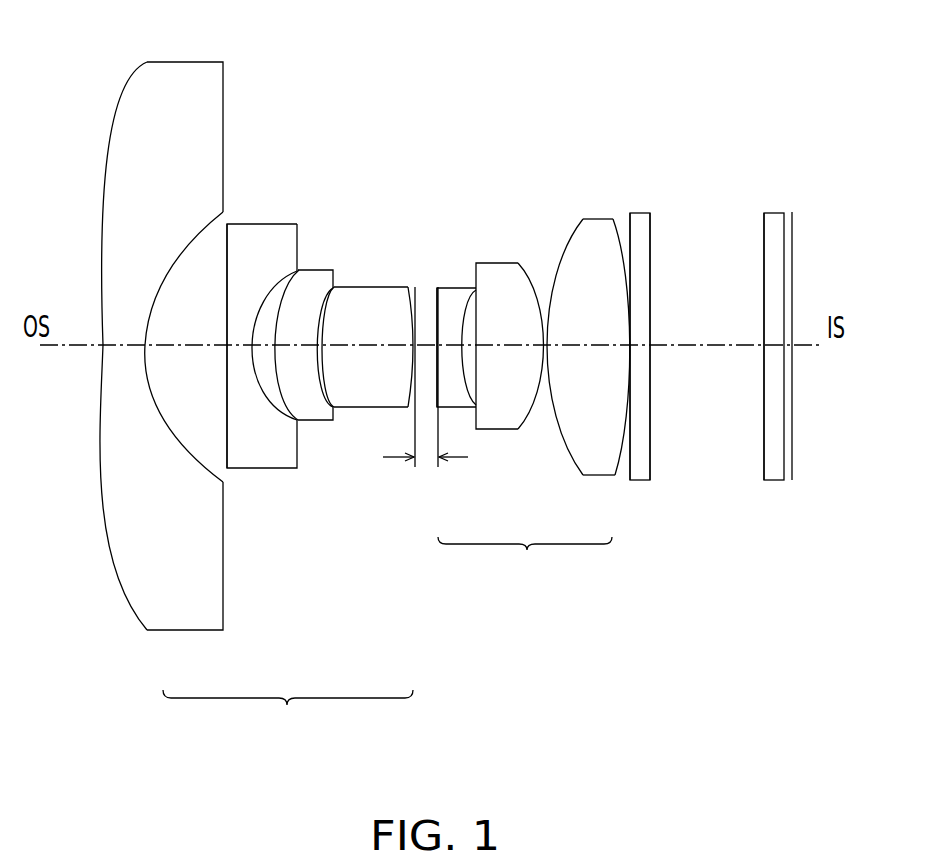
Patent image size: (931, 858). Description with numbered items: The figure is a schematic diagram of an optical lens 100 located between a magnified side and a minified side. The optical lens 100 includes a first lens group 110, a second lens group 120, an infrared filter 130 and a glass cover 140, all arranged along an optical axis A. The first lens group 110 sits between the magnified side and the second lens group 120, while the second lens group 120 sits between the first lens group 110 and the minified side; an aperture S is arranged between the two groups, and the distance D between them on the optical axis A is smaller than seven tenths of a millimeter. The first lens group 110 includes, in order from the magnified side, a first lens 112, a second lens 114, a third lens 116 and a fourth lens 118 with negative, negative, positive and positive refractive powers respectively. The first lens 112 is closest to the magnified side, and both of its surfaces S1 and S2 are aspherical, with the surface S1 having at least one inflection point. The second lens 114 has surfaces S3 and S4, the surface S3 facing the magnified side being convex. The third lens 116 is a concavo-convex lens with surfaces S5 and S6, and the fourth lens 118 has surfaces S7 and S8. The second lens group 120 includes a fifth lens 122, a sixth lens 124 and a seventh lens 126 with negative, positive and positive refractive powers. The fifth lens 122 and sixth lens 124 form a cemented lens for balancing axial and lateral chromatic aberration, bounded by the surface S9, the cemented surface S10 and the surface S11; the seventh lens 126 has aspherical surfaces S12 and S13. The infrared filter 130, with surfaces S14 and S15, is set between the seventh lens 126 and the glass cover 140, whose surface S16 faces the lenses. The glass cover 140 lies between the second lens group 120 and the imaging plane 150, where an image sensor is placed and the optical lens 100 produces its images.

The optical lens 100 is at (728, 740).
The first lens group 110 is at (255, 380).
The first lens 112 is at (180, 355).
The second lens 114 is at (273, 415).
The third lens 116 is at (331, 436).
The fourth lens 118 is at (372, 458).
The second lens group 120 is at (552, 376).
The fifth lens 122 is at (450, 378).
The sixth lens 124 is at (510, 368).
The seventh lens 126 is at (611, 352).
The infrared filter 130 is at (654, 353).
The glass cover 140 is at (759, 361).
The imaging plane 150 is at (794, 468).
The aperture S is at (416, 388).
The distance D is at (425, 389).
The optical axis A is at (63, 349).
The surface of the first lens facing the magnified side S1 is at (124, 99).
The surface of the first lens S2 is at (184, 250).
The surface of the second lens facing the magnified side S3 is at (226, 233).
The surface of the second lens S4 is at (264, 297).
The surface of the third lens S5 is at (291, 283).
The surface of the third lens S6 is at (320, 318).
The surface of the fourth lens S7 is at (324, 306).
The surface of the fourth lens S8 is at (413, 316).
The surface of the fifth lens S9 is at (436, 316).
The cemented surface S10 is at (464, 316).
The surface of the sixth lens S11 is at (537, 280).
The surface of the seventh lens S12 is at (555, 260).
The surface of the seventh lens S13 is at (632, 255).
The surface of the infrared filter S14 is at (629, 235).
The surface of the infrared filter S15 is at (652, 305).
The surface of the glass cover S16 is at (763, 250).